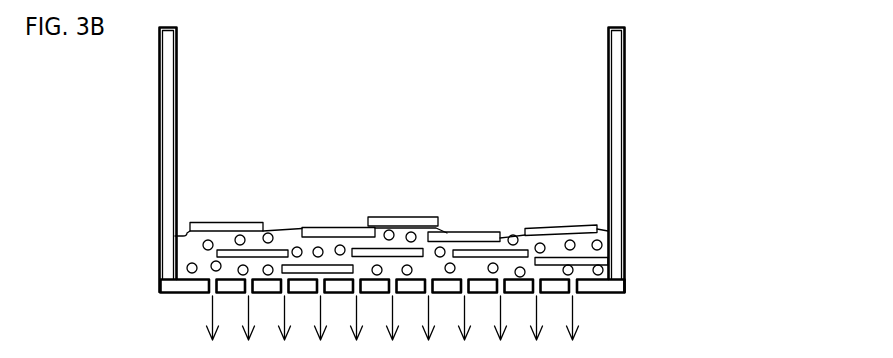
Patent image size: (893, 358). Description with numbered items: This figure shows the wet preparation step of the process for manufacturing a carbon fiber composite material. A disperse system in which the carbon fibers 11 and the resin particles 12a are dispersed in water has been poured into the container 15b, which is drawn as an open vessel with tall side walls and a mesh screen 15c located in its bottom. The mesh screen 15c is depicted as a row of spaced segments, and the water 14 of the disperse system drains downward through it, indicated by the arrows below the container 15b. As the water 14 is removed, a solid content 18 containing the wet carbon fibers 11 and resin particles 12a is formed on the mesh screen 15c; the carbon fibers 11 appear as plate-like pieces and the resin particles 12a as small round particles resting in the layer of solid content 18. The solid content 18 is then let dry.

The carbon fibers 11 is at (322, 228).
The resin particles 12a is at (442, 247).
The water 14 is at (580, 308).
The container 15b is at (625, 170).
The mesh screen 15c is at (610, 292).
The solid content 18 is at (390, 187).